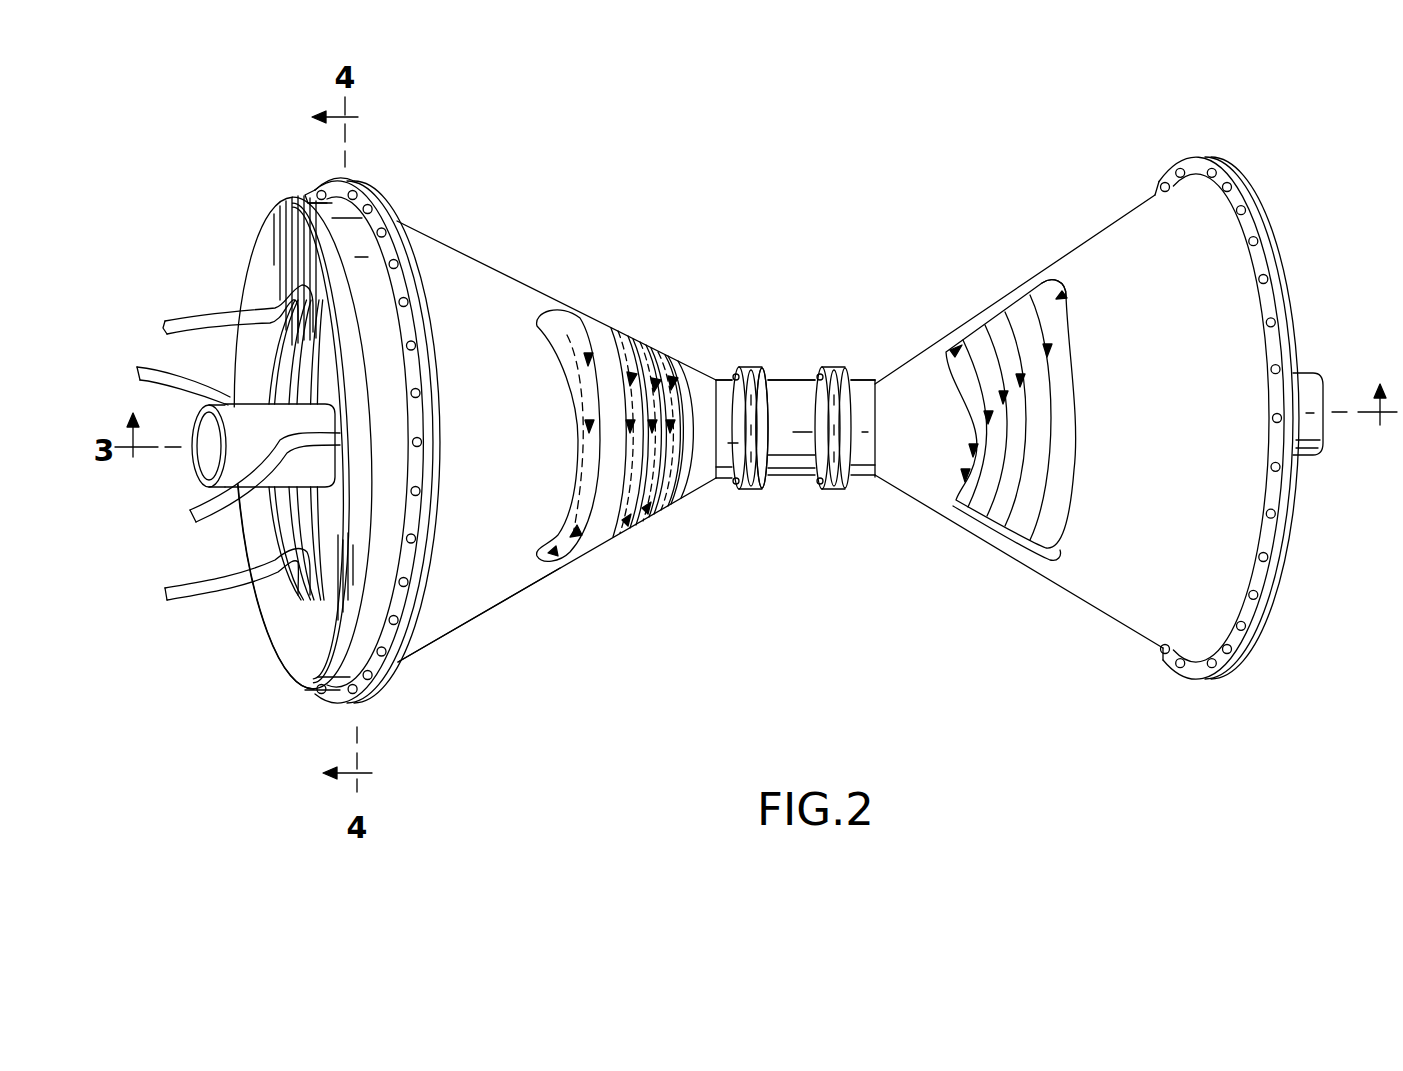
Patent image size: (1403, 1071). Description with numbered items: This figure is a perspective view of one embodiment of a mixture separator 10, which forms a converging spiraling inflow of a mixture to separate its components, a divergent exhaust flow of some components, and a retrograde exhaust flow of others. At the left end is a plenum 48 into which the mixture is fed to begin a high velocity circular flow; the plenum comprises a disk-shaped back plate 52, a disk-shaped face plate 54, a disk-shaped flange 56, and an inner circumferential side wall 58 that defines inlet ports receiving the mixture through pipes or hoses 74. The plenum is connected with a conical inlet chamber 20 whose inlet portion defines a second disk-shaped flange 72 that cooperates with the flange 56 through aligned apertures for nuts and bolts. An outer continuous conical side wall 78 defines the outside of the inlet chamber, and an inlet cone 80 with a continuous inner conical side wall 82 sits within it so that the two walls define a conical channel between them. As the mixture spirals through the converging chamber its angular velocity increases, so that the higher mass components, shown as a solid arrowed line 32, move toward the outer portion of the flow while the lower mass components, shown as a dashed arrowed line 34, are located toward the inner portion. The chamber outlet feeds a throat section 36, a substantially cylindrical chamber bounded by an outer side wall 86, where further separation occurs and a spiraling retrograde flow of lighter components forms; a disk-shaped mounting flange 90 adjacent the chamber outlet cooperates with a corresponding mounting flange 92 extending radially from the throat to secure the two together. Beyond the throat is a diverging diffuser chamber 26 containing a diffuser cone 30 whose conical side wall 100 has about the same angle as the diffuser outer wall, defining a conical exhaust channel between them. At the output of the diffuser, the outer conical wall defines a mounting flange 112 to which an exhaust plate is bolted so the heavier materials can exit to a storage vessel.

The mixture separator 10 is at (825, 216).
The inlet chamber 20 is at (454, 248).
The diffuser chamber 26 is at (991, 298).
The diffuser cone 30 is at (1024, 500).
The higher mass components flow 32 is at (615, 427).
The lower mass components flow 34 is at (563, 312).
The throat section 36 is at (793, 480).
The plenum 48 is at (247, 650).
The back plate 52 is at (262, 272).
The face plate 54 is at (300, 528).
The disk-shaped flange 56 is at (333, 192).
The inner circumferential side wall 58 is at (277, 514).
The second disk-shaped flange 72 is at (370, 196).
The hoses 74 is at (183, 318).
The outer conical side wall 78 is at (487, 595).
The inlet cone 80 is at (607, 389).
The inner conical side wall 82 is at (604, 412).
The outer side wall 86 is at (789, 382).
The mounting flange 90 is at (733, 374).
The mounting flange 92 is at (753, 490).
The conical side wall 100 is at (1036, 305).
The mounting flange 112 is at (1193, 162).